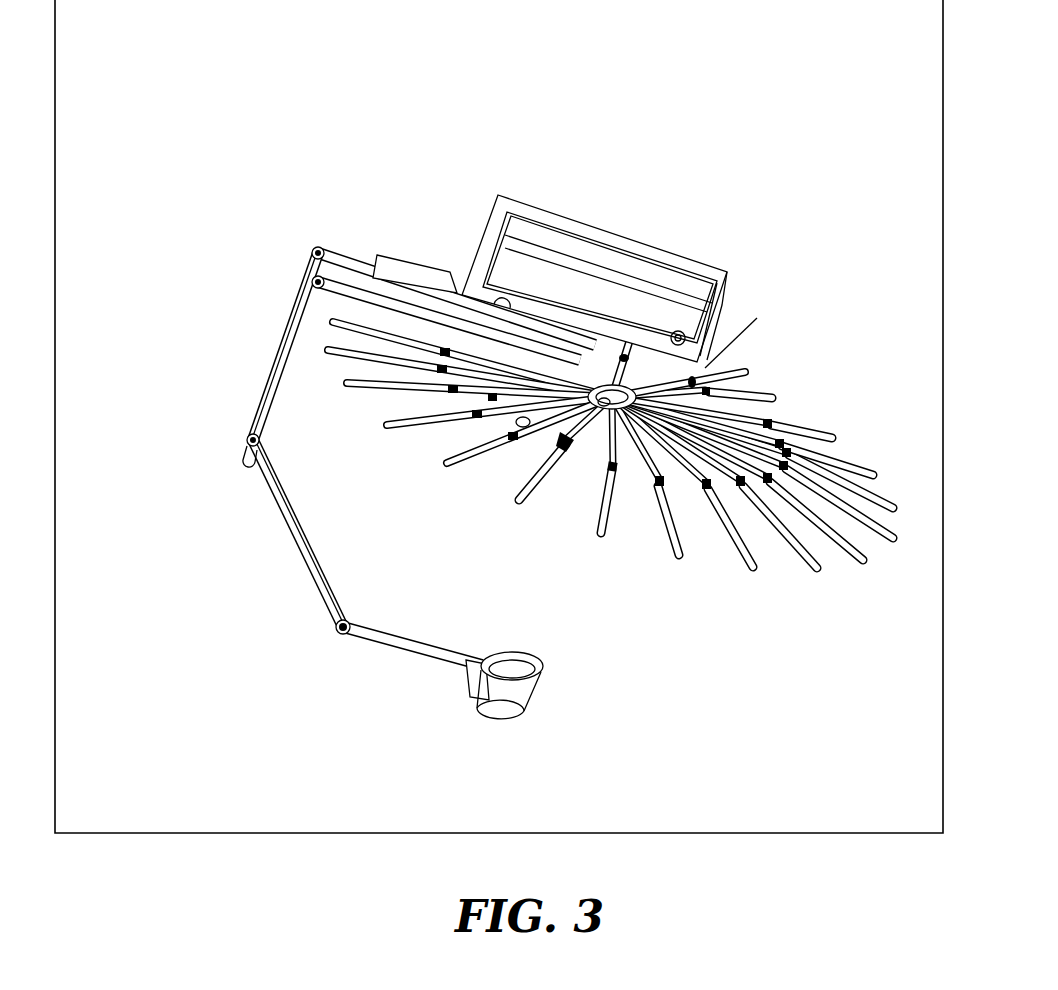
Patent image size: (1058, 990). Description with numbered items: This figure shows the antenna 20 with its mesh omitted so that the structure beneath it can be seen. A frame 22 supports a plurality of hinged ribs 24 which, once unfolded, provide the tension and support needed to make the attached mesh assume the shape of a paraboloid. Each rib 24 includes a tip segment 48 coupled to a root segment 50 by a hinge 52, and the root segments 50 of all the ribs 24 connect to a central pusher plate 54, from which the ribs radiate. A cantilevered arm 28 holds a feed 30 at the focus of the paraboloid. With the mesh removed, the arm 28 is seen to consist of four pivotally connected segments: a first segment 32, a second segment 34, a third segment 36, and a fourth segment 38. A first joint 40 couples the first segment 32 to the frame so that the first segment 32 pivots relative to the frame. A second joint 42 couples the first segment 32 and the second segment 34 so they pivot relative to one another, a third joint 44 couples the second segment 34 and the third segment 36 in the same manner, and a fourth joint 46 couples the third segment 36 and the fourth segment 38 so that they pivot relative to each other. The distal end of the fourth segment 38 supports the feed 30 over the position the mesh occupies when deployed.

The antenna 20 is at (108, 32).
The frame 22 is at (683, 250).
The hinged rib 24 is at (806, 423).
The cantilevered arm 28 is at (303, 465).
The feed 30 is at (535, 686).
The first segment 32 is at (456, 236).
The second segment 34 is at (292, 312).
The third segment 36 is at (274, 525).
The fourth segment 38 is at (391, 655).
The first joint 40 is at (419, 247).
The second joint 42 is at (319, 247).
The third joint 44 is at (247, 448).
The fourth joint 46 is at (335, 628).
The tip segment 48 is at (618, 514).
The root segment 50 is at (592, 408).
The hinge 52 is at (516, 421).
The pusher plate 54 is at (602, 410).